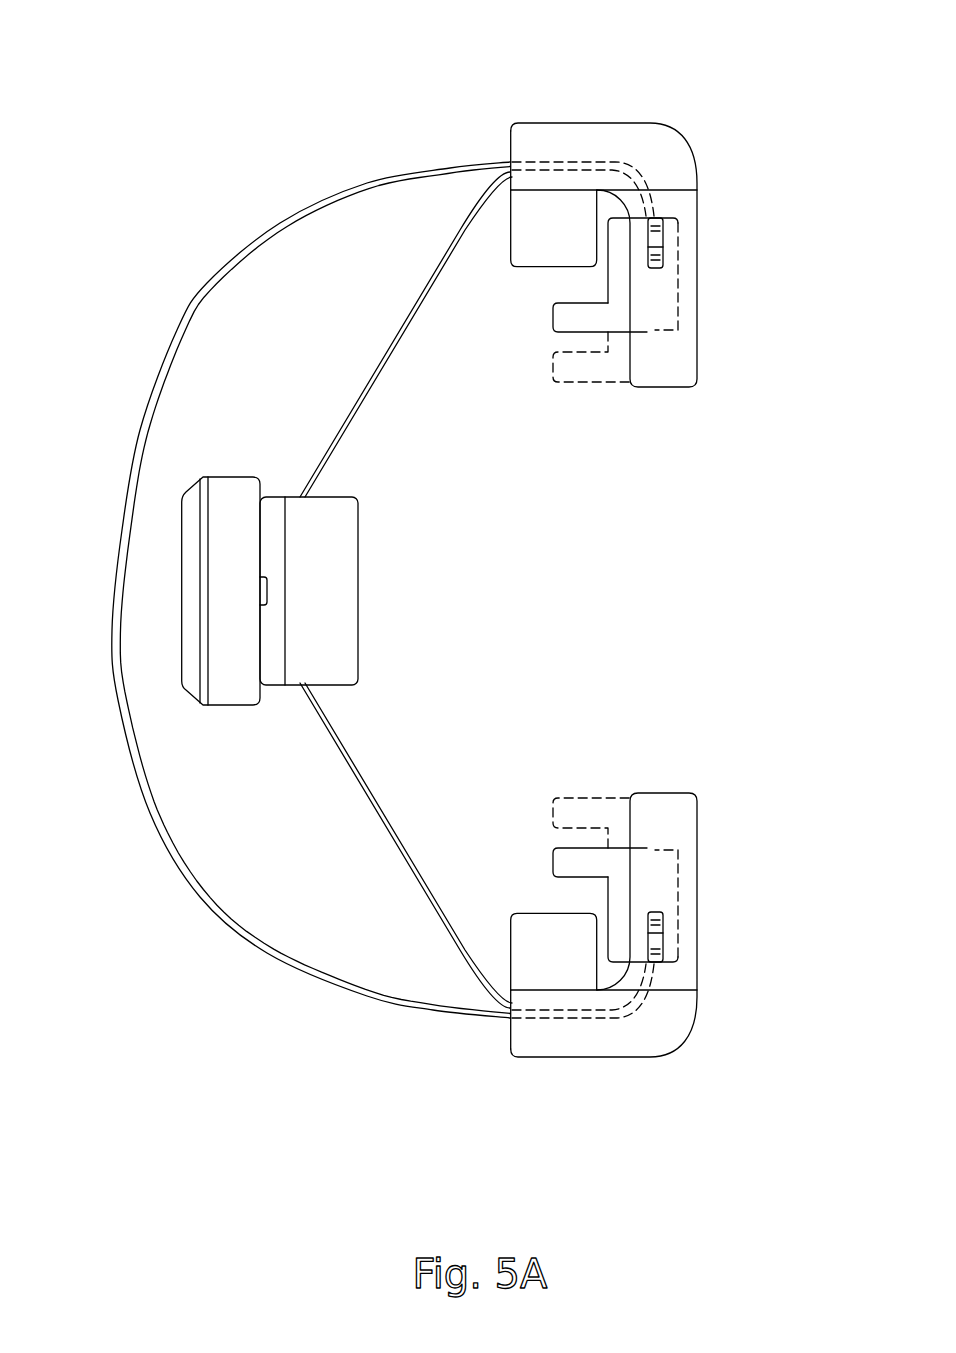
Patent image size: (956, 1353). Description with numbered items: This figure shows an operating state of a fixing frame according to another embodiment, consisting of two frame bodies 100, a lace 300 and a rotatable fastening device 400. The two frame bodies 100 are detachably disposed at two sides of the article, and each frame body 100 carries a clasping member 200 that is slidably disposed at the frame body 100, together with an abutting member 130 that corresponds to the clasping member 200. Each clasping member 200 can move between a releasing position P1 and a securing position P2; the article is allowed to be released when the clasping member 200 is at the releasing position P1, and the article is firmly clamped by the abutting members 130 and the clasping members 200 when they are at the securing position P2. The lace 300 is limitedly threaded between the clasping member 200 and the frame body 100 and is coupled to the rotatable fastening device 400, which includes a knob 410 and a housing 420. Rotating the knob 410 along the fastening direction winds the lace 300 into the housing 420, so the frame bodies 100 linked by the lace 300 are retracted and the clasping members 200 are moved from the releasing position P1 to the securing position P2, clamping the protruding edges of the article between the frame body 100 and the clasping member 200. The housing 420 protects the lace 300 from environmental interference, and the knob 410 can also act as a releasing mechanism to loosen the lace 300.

The frame body 100 is at (560, 138).
The abutting member 130 is at (525, 238).
The clasping member 200 is at (585, 320).
The lace 300 is at (190, 315).
The rotatable fastening device 400 is at (285, 377).
The knob 410 is at (230, 493).
The housing 420 is at (295, 507).
The releasing position P1 is at (535, 370).
The securing position P2 is at (535, 315).